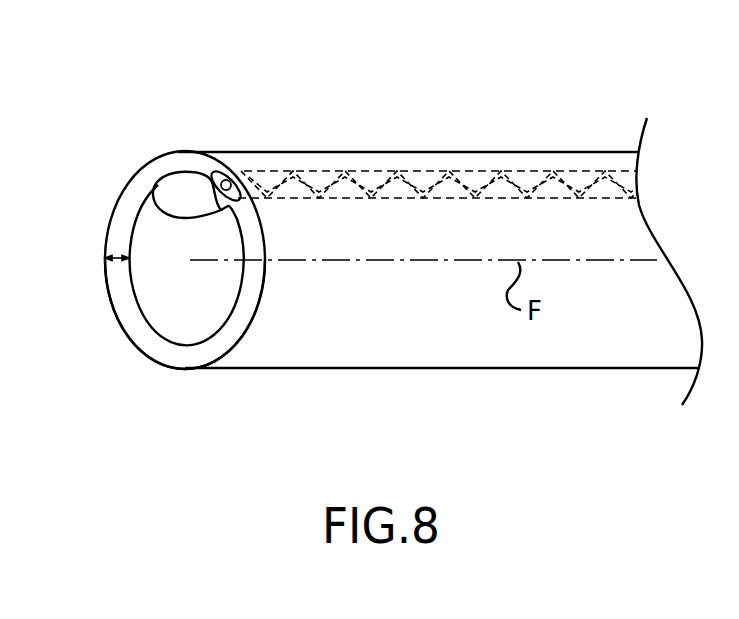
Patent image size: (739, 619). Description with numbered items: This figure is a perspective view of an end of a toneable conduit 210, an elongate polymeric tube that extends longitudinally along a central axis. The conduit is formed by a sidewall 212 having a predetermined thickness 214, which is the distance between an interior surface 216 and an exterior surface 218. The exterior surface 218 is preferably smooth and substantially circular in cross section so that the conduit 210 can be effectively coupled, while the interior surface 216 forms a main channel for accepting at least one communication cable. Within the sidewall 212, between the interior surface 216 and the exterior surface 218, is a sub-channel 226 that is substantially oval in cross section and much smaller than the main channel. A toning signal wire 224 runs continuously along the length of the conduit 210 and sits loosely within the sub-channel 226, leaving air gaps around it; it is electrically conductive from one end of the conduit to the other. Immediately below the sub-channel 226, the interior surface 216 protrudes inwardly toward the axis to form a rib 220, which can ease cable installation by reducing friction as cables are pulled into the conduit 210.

The toneable conduit 210 is at (344, 106).
The sidewall 212 is at (238, 323).
The predetermined thickness 214 is at (112, 264).
The interior surface 216 is at (152, 322).
The exterior surface 218 is at (225, 362).
The rib 220 is at (155, 196).
The toning signal wire 224 is at (433, 180).
The sub-channel 226 is at (218, 175).